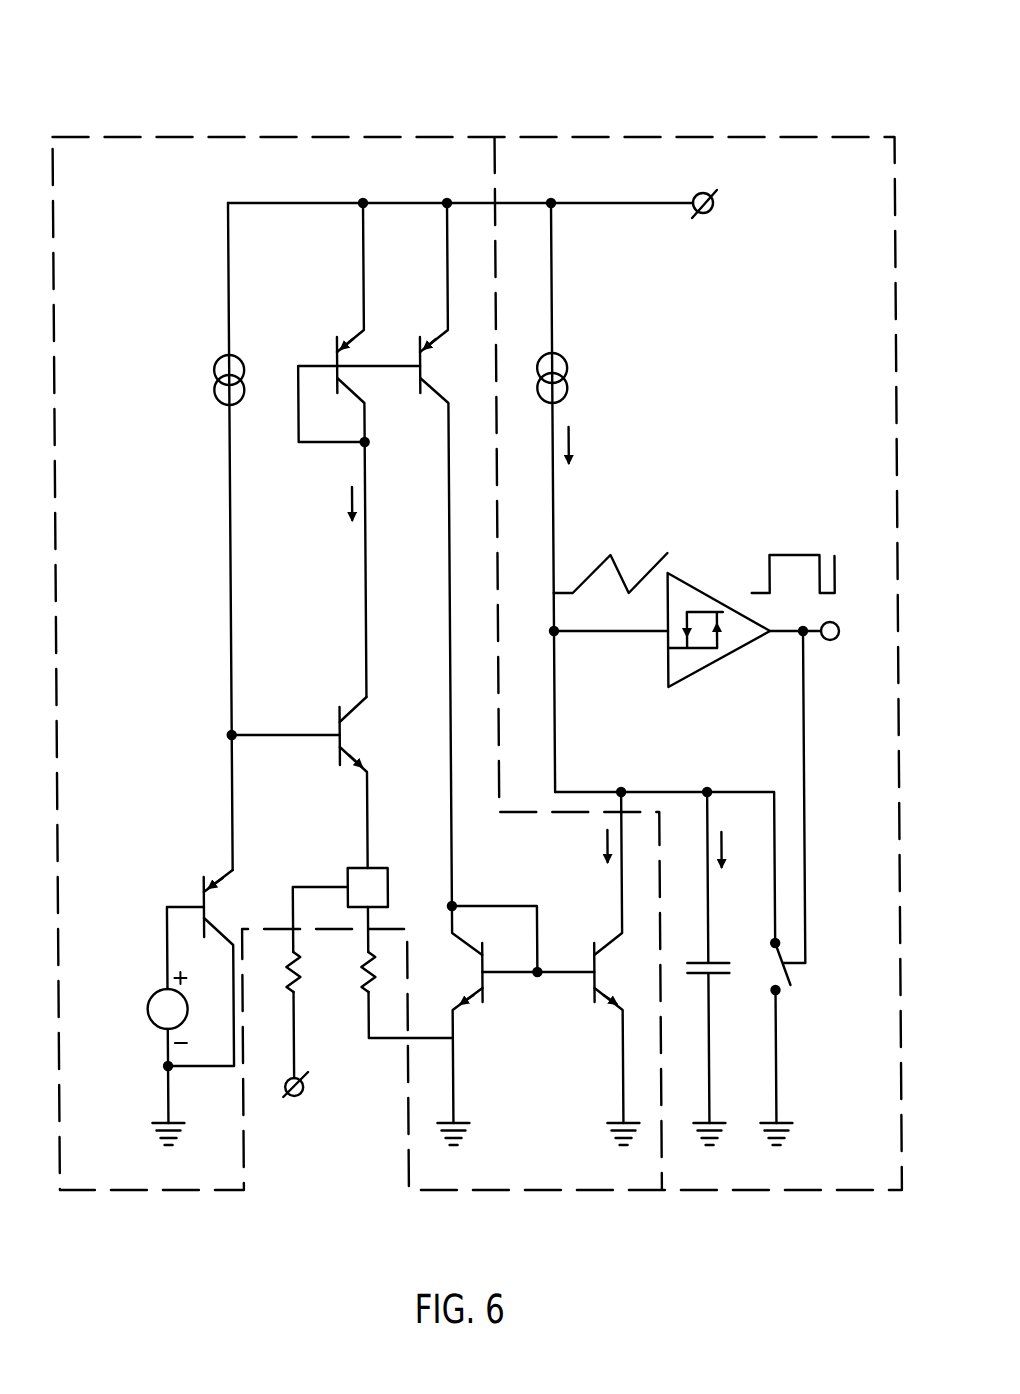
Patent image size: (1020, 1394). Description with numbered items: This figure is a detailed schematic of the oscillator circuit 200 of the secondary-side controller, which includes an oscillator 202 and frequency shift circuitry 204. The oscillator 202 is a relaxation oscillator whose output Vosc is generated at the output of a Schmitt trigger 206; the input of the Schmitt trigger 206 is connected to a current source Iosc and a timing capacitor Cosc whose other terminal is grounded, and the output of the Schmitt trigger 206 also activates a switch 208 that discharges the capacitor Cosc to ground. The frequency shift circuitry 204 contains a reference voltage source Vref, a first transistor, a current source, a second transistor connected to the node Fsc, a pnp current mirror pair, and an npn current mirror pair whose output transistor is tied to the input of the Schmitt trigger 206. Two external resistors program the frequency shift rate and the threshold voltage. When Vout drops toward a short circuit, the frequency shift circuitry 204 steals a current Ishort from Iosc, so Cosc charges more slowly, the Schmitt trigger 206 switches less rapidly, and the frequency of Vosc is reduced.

The oscillator circuit 200 is at (309, 70).
The oscillator 202 is at (855, 187).
The frequency shift circuitry 204 is at (143, 190).
The Schmitt trigger 206 is at (682, 592).
The switch 208 is at (787, 973).